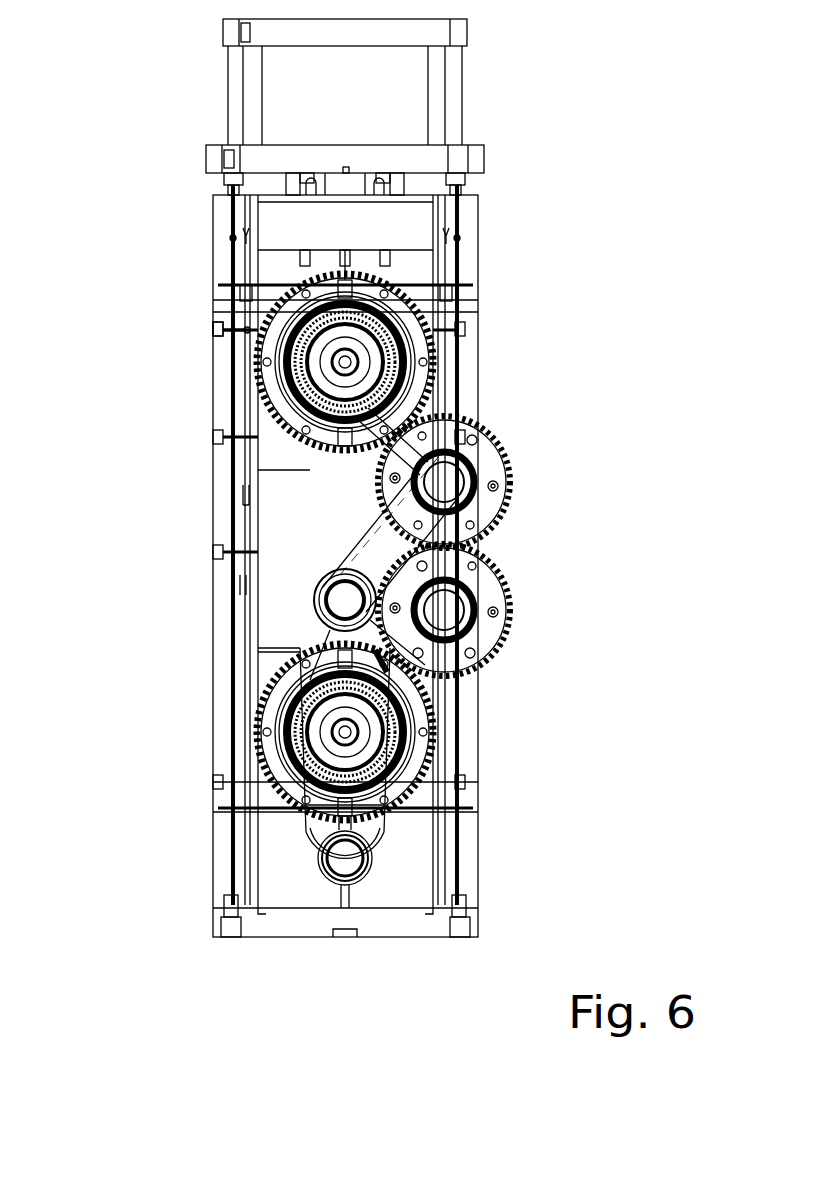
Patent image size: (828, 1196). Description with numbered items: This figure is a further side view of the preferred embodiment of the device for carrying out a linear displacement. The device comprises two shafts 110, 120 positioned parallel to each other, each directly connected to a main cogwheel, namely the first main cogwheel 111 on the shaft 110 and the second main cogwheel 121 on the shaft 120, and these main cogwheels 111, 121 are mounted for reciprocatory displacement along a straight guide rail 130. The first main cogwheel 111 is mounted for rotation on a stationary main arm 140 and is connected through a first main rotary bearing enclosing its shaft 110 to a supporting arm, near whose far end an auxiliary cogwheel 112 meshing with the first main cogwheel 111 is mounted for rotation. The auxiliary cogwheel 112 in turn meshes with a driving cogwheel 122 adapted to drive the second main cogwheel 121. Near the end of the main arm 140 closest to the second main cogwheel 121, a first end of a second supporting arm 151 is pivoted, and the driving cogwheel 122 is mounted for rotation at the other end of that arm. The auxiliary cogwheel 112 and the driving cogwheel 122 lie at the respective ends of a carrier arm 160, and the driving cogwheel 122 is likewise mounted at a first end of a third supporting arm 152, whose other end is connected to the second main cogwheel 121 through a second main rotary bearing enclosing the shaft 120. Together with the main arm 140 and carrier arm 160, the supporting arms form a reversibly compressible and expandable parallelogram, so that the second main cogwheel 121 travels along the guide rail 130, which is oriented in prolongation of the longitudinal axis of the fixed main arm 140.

The rotary shaft 110 is at (265, 770).
The first main cogwheel 111 is at (285, 785).
The auxiliary cogwheel 112 is at (490, 645).
The rotary shaft 120 is at (330, 372).
The second main cogwheel 121 is at (247, 337).
The driving cogwheel 122 is at (497, 437).
The guide rail 130 is at (220, 233).
The main arm 140 is at (320, 632).
The second supporting arm 151 is at (365, 540).
The third supporting arm 152 is at (432, 398).
The carrier arm 160 is at (472, 538).